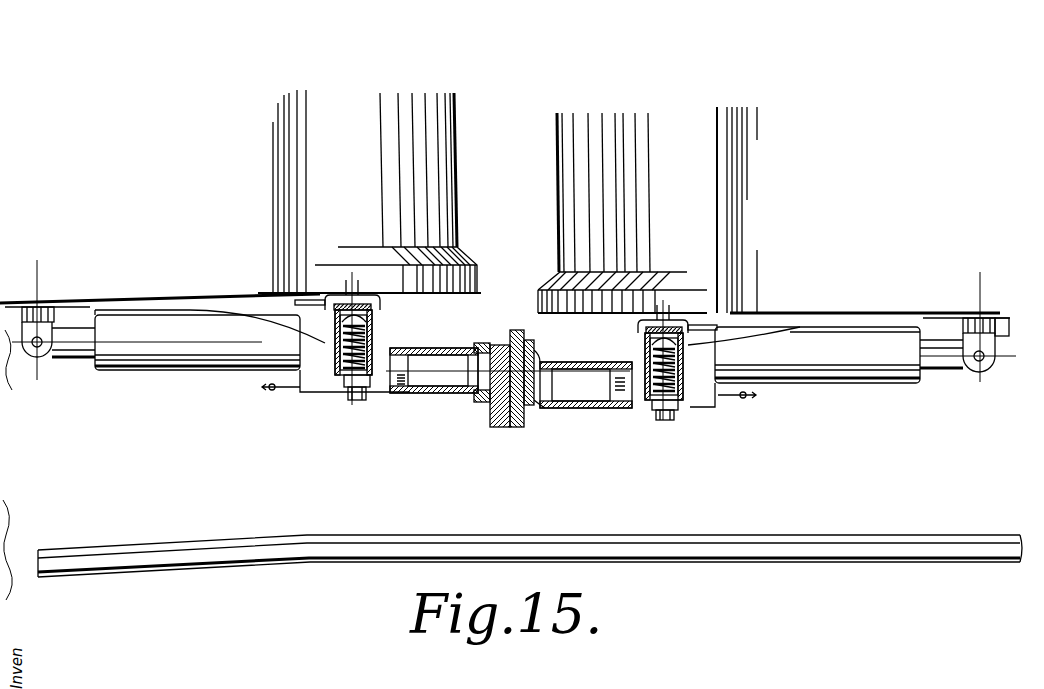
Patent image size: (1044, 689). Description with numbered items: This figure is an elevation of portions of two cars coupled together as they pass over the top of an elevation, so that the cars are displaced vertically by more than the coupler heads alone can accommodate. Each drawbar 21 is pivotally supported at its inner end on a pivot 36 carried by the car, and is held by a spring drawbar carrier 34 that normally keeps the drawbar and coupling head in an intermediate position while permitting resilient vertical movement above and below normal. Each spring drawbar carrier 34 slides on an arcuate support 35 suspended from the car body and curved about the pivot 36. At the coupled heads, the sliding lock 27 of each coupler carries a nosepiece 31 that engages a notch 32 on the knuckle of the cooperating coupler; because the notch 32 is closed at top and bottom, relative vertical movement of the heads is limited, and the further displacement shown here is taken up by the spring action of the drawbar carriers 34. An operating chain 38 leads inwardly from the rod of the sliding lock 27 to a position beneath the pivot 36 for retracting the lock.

The drawbar 21 is at (127, 362).
The sliding lock 27 is at (436, 360).
The nosepiece 31 is at (497, 342).
The notch 32 is at (528, 343).
The spring drawbar carrier 34 is at (375, 337).
The arcuate support 35 is at (348, 294).
The pivot 36 is at (42, 300).
The operating chain 38 is at (262, 388).